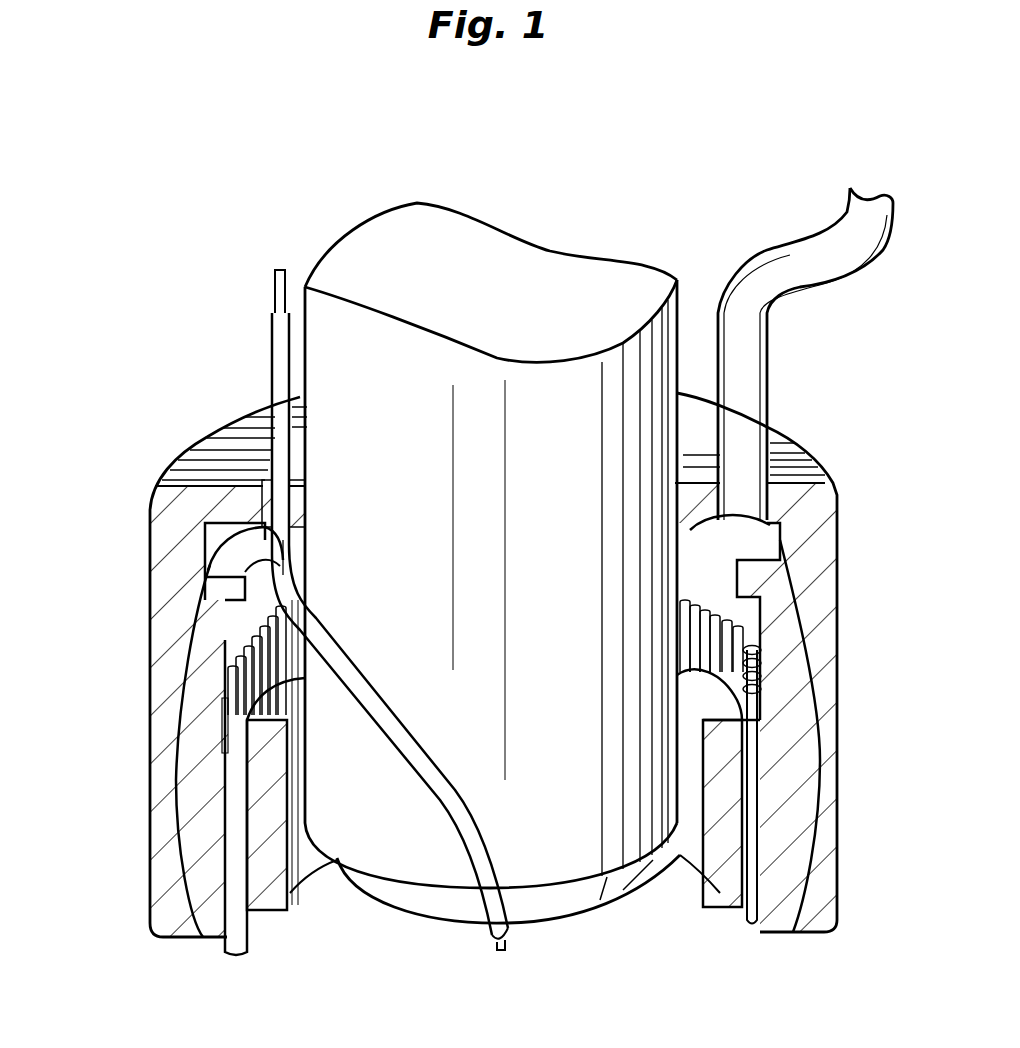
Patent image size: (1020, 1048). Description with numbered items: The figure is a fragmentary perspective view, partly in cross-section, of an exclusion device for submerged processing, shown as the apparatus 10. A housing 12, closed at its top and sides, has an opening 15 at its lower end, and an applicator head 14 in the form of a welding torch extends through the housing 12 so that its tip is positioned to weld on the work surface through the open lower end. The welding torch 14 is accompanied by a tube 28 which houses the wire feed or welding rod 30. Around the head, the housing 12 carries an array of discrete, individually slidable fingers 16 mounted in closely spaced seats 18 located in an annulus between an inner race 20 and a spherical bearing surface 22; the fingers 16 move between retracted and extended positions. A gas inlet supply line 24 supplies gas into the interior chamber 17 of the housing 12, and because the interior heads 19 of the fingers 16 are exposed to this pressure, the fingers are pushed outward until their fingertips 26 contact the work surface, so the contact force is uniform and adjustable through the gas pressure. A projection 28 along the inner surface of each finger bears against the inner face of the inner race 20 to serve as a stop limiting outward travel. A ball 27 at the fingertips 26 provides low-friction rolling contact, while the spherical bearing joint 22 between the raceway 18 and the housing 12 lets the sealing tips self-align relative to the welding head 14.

The apparatus 10 is at (150, 328).
The housing 12 is at (192, 447).
The applicator head 14 is at (412, 215).
The opening 15 is at (331, 920).
The fingers 16 is at (237, 937).
The chamber 17 is at (238, 617).
The seats 18 is at (763, 722).
The heads 19 is at (230, 666).
The inner race 20 is at (727, 910).
The spherical bearing surface 22 is at (777, 930).
The gas inlet supply line 24 is at (812, 250).
The fingertips 26 is at (228, 953).
The ball 27 is at (738, 927).
The projection 28 is at (272, 381).
The welding rod 30 is at (275, 291).